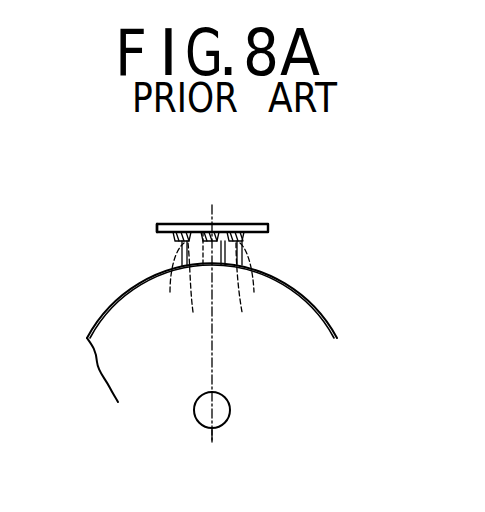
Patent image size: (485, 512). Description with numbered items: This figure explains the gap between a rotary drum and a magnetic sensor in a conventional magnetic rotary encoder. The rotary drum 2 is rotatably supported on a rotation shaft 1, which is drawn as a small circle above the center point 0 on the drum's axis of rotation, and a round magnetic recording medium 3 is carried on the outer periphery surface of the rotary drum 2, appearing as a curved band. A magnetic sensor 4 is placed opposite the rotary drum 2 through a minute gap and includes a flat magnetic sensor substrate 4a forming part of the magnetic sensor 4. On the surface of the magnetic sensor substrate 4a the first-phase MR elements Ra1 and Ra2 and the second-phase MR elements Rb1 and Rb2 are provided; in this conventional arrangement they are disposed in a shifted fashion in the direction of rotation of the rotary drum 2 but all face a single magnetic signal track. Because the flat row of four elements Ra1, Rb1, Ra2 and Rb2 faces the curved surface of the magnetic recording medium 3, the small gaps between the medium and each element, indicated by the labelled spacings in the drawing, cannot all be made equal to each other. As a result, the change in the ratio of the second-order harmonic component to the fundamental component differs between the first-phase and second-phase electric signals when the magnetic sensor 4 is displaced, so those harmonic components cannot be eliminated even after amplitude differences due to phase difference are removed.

The center of rotation 0 is at (213, 454).
The rotation shaft 1 is at (202, 423).
The rotary drum 2 is at (103, 323).
The magnetic recording medium 3 is at (126, 300).
The magnetic sensor 4 is at (270, 229).
The magnetic sensor substrate 4a is at (156, 228).
The first-phase MR element Ra1 is at (181, 232).
The second-phase MR element Rb1 is at (193, 232).
The first-phase MR element Ra2 is at (227, 232).
The second-phase MR element Rb2 is at (253, 227).